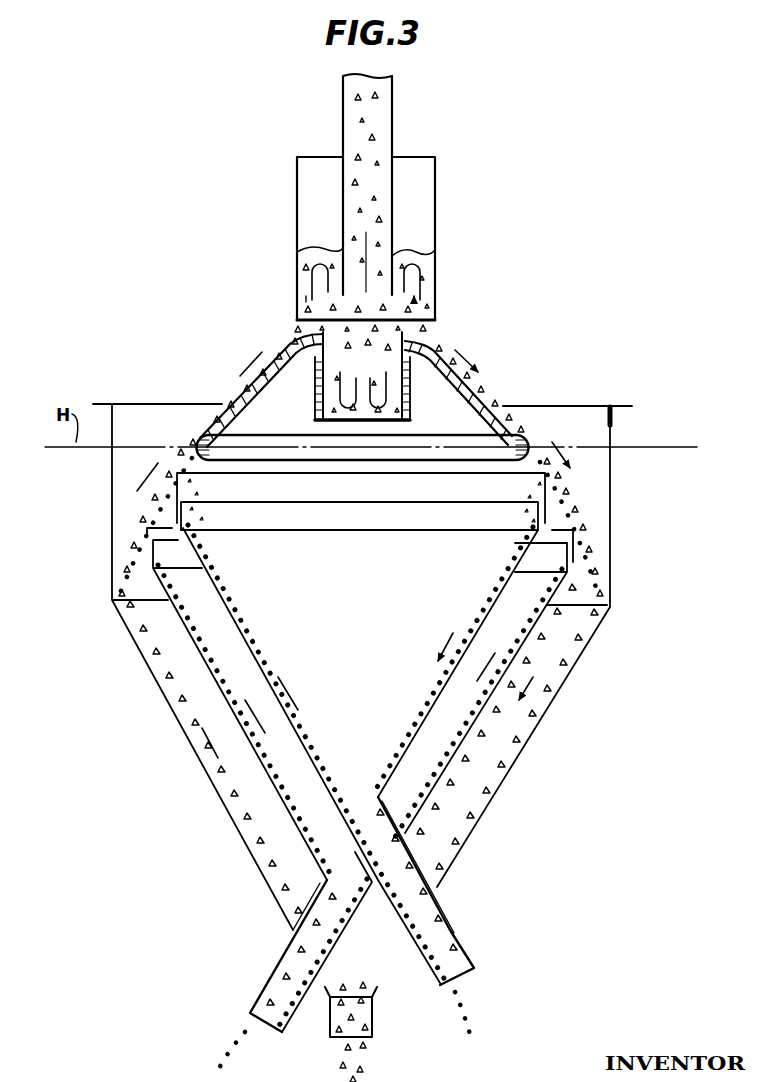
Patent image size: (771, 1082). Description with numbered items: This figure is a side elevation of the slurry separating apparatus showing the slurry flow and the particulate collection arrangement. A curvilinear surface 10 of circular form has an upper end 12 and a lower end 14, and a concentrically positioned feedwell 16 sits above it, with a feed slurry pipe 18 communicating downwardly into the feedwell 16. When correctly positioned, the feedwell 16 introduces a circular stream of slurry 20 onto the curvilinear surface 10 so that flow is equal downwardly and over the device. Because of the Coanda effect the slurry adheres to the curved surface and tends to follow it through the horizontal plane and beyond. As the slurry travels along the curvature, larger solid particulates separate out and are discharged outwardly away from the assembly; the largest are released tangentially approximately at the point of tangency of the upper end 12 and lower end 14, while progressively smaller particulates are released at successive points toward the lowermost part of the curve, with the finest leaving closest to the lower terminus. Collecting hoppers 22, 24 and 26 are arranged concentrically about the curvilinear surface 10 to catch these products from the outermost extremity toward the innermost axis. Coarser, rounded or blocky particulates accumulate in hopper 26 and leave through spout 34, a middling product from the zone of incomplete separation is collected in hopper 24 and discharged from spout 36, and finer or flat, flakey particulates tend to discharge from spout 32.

The curvilinear surface 10 is at (500, 386).
The upper end 12 is at (462, 363).
The lower end 14 is at (528, 438).
The feedwell 16 is at (435, 222).
The feed slurry pipe 18 is at (392, 118).
The circular stream of slurry 20 is at (438, 340).
The collecting hopper 22 is at (400, 724).
The collecting hopper 24 is at (517, 634).
The collecting hopper 26 is at (611, 503).
The spout 32 is at (466, 969).
The spout 34 is at (372, 1035).
The spout 36 is at (258, 1002).